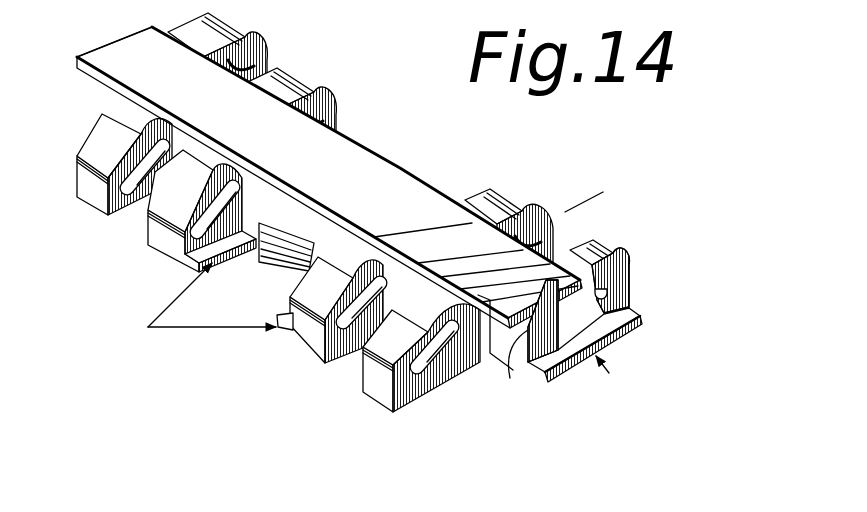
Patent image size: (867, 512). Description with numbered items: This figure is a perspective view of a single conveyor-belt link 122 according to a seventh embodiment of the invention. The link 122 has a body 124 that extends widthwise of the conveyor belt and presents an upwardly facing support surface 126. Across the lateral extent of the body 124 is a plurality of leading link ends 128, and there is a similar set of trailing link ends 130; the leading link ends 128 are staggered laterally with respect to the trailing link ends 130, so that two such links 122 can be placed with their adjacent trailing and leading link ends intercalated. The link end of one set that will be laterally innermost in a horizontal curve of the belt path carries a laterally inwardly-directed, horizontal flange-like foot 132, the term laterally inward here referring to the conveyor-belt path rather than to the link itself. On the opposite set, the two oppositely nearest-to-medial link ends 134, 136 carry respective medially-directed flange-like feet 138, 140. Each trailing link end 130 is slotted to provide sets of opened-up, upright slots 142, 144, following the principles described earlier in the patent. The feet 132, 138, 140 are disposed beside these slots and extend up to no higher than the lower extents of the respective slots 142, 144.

The link 122 is at (397, 127).
The body 124 is at (587, 338).
The support surface 126 is at (393, 178).
The leading link ends 128 is at (226, 25).
The trailing link ends 130 is at (253, 272).
The foot 132 is at (632, 309).
The link end 134 is at (356, 244).
The link end 136 is at (212, 161).
The foot 138 is at (283, 314).
The foot 140 is at (222, 257).
The slots 142 is at (608, 293).
The slots 144 is at (425, 368).